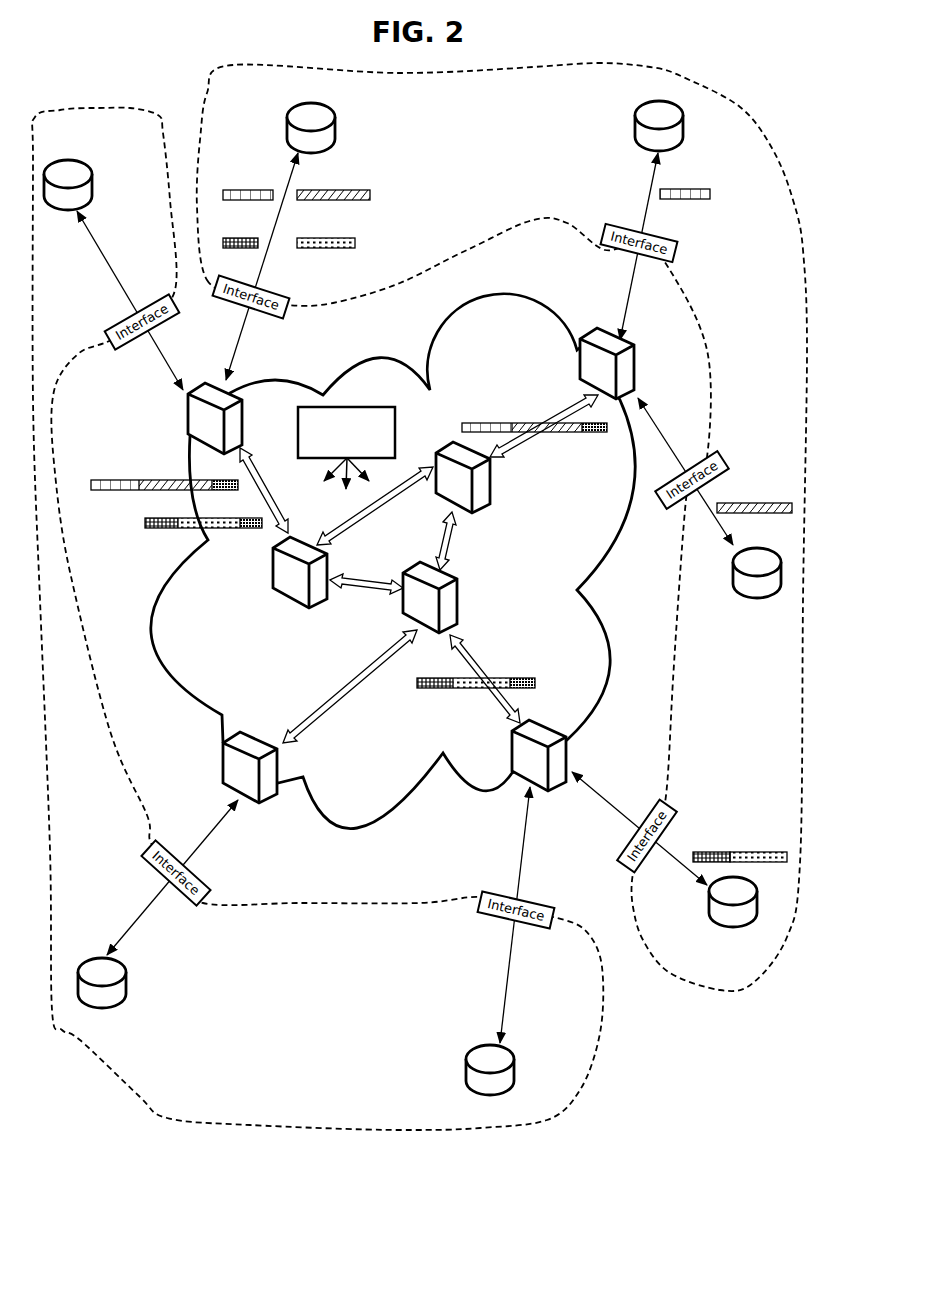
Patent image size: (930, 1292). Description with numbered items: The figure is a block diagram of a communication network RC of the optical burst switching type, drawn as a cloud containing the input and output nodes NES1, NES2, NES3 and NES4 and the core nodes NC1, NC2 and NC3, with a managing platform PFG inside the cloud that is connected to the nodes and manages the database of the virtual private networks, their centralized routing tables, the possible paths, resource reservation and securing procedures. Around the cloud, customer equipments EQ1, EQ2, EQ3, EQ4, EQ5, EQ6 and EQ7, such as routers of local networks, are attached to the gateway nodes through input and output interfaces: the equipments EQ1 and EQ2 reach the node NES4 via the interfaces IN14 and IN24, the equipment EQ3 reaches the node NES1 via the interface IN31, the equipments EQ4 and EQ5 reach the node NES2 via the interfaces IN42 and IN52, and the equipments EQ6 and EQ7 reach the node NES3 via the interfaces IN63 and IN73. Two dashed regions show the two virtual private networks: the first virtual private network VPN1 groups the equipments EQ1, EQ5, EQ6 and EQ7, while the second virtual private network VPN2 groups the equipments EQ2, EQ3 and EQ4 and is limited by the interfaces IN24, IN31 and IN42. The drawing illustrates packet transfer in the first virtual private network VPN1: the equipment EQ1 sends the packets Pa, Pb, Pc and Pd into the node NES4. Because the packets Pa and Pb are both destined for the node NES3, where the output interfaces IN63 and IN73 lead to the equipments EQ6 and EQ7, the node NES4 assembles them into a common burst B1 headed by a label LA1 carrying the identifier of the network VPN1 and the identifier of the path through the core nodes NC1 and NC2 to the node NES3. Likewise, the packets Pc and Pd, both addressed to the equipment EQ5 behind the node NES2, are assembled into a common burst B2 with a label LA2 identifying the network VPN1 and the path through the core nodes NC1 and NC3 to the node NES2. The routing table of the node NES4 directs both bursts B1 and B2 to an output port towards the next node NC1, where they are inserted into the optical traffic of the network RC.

The first virtual private network VPN1 is at (737, 100).
The second virtual private network VPN2 is at (92, 108).
The communication network RC is at (147, 621).
The managing platform PFG is at (293, 438).
The input and output node NES1 is at (227, 767).
The input and output node NES2 is at (564, 755).
The input and output node NES3 is at (633, 363).
The input and output node NES4 is at (192, 418).
The core node NC1 is at (294, 579).
The core node NC2 is at (484, 477).
The core node NC3 is at (450, 597).
The customer equipment EQ1 is at (331, 128).
The customer equipment EQ2 is at (68, 175).
The customer equipment EQ3 is at (102, 995).
The customer equipment EQ4 is at (490, 1080).
The customer equipment EQ5 is at (733, 912).
The customer equipment EQ6 is at (757, 563).
The customer equipment EQ7 is at (659, 117).
The input and output interface IN14 is at (265, 266).
The input and output interface IN24 is at (124, 300).
The input and output interface IN31 is at (169, 877).
The input and output interface IN42 is at (500, 915).
The input and output interface IN52 is at (642, 828).
The input and output interface IN63 is at (701, 471).
The input and output interface IN73 is at (658, 246).
The common burst B1 is at (338, 456).
The common burst B2 is at (327, 604).
The label LA1 is at (407, 456).
The label LA2 is at (383, 594).
The packet Pa is at (465, 342).
The packet Pb is at (400, 330).
The packet Pc is at (482, 540).
The packet Pd is at (437, 540).